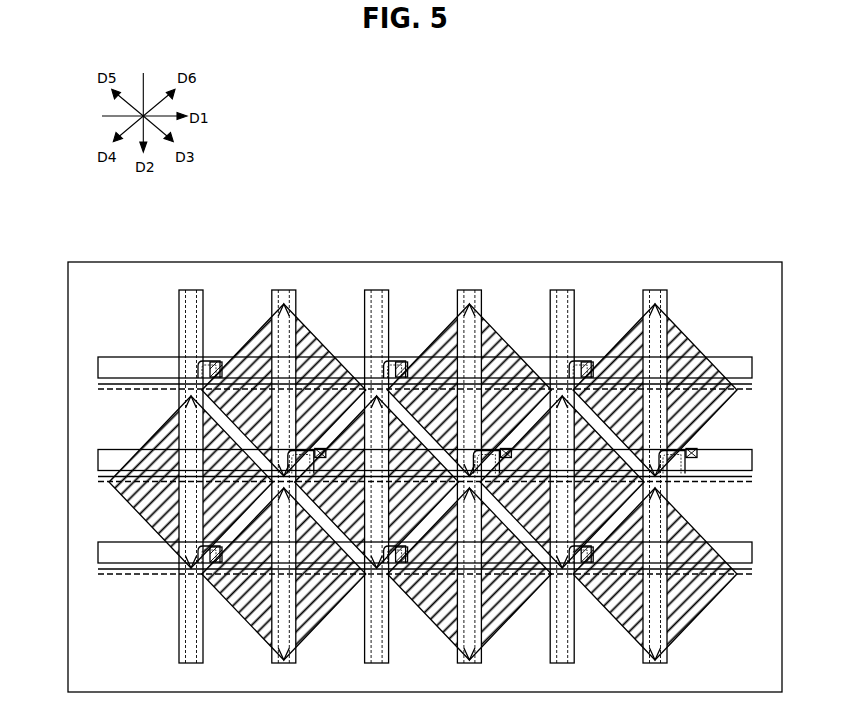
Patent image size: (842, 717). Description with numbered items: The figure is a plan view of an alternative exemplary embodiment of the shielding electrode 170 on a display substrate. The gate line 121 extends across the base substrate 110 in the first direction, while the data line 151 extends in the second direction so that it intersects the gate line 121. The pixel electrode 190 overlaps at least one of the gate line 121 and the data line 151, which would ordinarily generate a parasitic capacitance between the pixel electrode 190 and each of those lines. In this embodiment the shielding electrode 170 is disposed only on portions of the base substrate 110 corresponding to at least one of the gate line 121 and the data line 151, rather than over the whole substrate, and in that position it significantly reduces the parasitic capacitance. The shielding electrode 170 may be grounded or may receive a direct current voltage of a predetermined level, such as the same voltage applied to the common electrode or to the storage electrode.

The base substrate 110 is at (423, 261).
The gate line 121 is at (97, 382).
The data line 151 is at (192, 290).
The shielding electrode 170 is at (730, 357).
The pixel electrode 190 is at (318, 323).